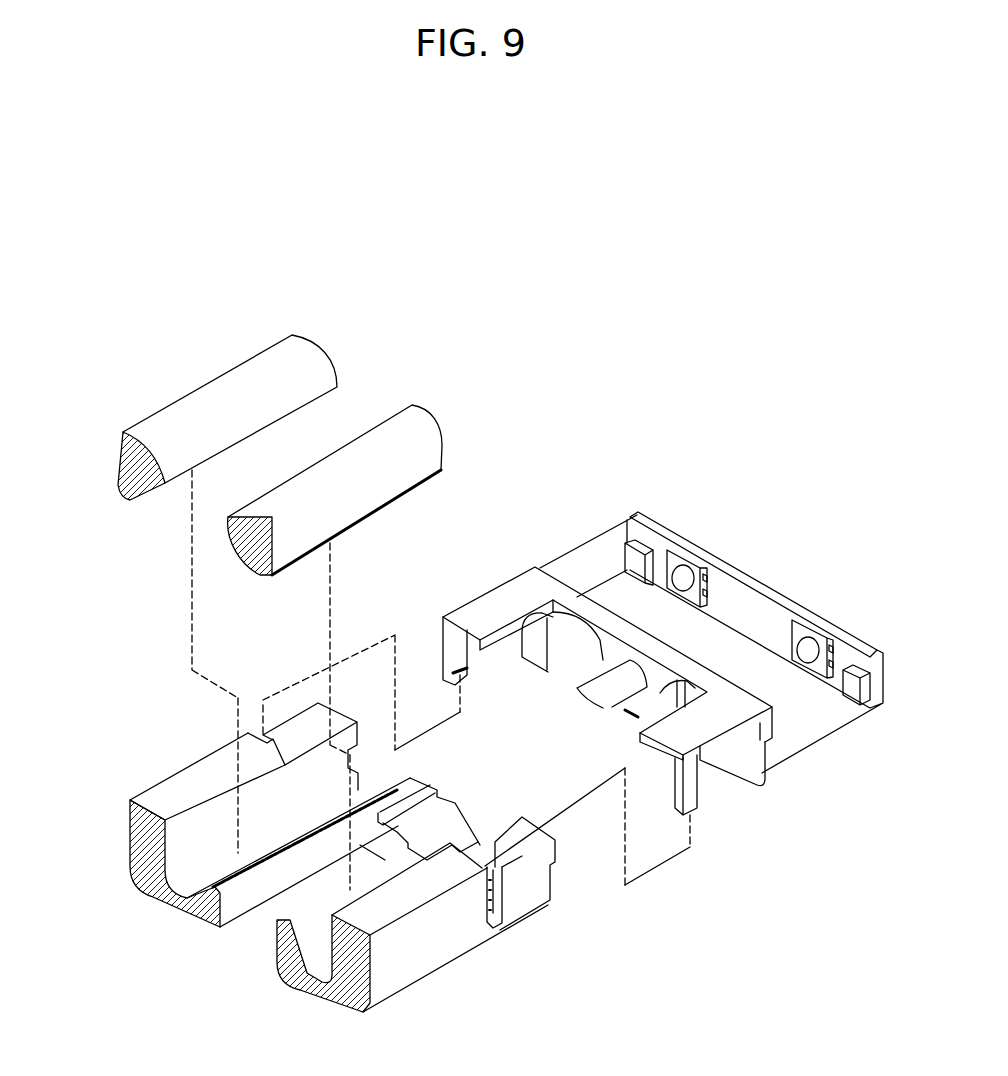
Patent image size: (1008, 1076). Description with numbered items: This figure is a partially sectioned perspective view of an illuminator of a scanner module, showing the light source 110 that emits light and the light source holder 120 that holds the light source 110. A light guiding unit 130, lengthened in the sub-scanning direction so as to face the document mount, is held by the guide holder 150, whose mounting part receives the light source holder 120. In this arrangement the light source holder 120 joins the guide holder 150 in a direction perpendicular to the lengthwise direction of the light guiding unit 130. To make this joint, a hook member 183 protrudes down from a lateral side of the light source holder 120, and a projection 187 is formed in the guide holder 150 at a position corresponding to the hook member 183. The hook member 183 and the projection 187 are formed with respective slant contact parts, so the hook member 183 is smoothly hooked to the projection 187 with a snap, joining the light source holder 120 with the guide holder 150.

The light source 110 is at (677, 515).
The light source holder 120 is at (536, 553).
The light guiding unit 130 is at (353, 350).
The guide holder 150 is at (120, 840).
The hook member 183 is at (693, 795).
The projection 187 is at (495, 921).